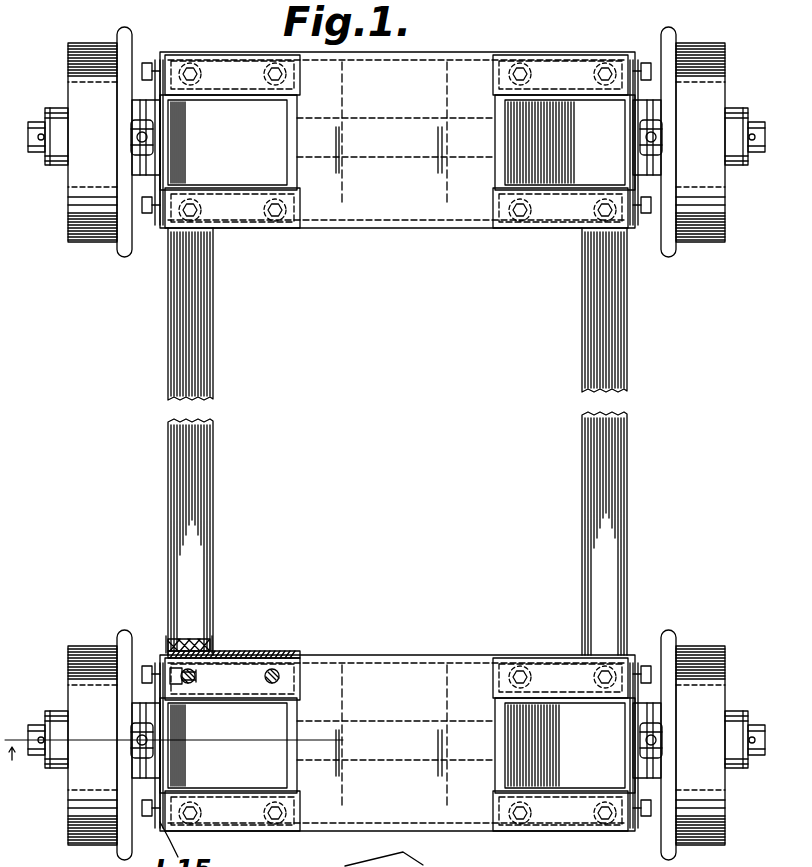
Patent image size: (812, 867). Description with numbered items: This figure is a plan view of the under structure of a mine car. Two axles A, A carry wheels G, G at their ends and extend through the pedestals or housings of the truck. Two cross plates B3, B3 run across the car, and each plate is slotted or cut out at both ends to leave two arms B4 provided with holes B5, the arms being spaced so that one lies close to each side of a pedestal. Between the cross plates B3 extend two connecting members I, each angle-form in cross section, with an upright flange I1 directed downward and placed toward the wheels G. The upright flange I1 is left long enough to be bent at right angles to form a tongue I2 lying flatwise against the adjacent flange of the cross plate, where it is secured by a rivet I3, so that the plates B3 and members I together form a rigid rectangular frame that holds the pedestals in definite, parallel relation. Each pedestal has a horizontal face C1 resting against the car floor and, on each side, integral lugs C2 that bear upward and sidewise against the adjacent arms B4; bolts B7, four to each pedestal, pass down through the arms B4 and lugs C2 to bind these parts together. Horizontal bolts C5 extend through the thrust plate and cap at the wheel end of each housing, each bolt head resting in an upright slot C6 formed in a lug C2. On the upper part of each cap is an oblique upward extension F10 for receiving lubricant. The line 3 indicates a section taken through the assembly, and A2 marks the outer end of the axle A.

The wheel G is at (718, 52).
The axle A is at (33, 122).
The axle end journal A2 is at (42, 140).
The oblique upward extension F10 is at (150, 137).
The horizontal bolt C5 is at (148, 63).
The cross plate B3 is at (405, 210).
The arm B4 is at (227, 78).
The bolt B7 is at (517, 76).
The horizontal face C1 is at (286, 168).
The connecting member I is at (205, 470).
The upright flange I1 is at (170, 644).
The tongue I2 is at (215, 651).
The rivet I3 is at (200, 648).
The lug C2 is at (230, 653).
The hole B5 is at (296, 658).
The upright slot C6 is at (152, 665).
The section line 3- 3 is at (213, 794).